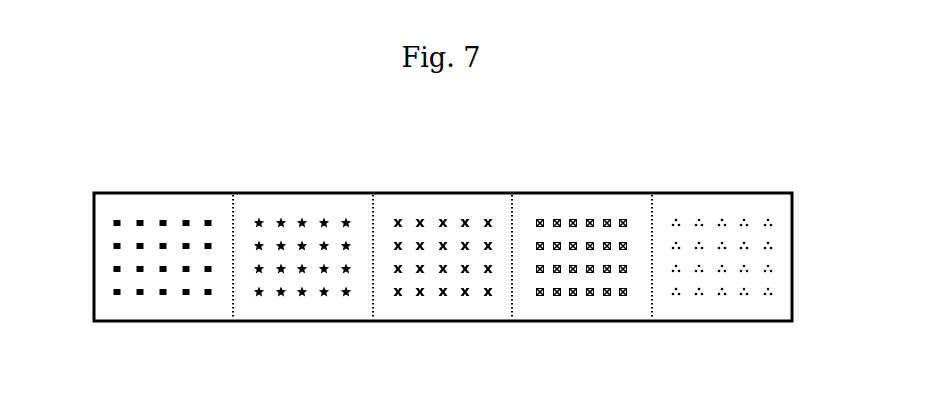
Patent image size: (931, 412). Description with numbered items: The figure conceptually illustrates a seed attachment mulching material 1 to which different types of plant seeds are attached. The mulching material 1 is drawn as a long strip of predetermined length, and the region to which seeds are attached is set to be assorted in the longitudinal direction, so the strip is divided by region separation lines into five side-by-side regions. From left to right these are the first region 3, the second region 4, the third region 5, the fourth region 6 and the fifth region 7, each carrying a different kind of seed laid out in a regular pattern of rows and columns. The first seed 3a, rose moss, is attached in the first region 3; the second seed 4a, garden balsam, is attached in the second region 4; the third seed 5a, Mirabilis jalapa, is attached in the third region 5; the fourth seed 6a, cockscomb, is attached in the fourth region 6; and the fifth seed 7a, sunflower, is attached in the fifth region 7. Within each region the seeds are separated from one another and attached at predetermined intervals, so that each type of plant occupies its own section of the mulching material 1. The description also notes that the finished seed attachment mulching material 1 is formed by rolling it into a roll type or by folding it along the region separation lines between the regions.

The seed attachment mulching material 1 is at (396, 133).
The first region 3 is at (163, 247).
The first seed 3a is at (163, 296).
The second region 4 is at (302, 247).
The second seed 4a is at (302, 297).
The third region 5 is at (443, 247).
The third seed 5a is at (443, 296).
The fourth region 6 is at (582, 247).
The fourth seed 6a is at (590, 296).
The fifth region 7 is at (722, 247).
The fifth seed 7a is at (722, 296).